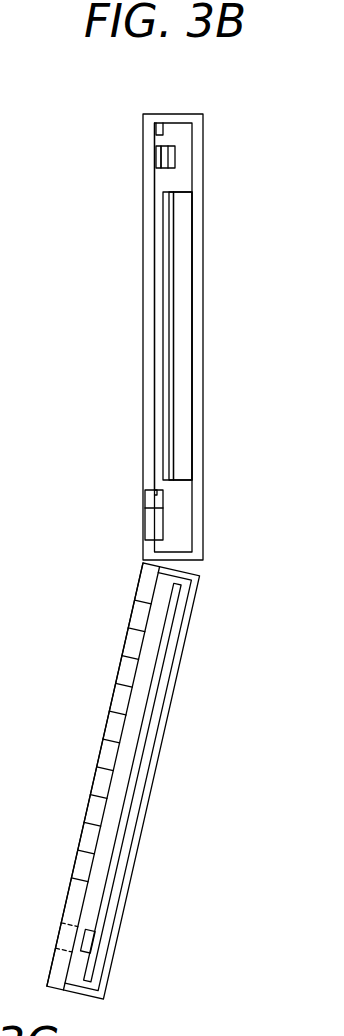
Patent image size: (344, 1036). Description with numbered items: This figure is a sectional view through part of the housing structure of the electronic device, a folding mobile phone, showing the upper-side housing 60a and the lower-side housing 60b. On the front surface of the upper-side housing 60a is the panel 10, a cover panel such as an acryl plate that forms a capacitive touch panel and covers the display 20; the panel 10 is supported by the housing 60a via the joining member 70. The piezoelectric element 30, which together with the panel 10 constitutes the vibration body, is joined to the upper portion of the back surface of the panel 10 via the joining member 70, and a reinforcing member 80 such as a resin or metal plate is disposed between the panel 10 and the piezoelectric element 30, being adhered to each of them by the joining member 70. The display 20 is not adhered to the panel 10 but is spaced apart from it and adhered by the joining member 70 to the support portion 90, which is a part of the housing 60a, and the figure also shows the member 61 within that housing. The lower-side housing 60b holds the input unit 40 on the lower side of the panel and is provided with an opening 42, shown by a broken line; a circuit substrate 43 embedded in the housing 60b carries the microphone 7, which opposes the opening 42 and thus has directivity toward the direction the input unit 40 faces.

The microphone 7 is at (92, 940).
The panel 10 is at (146, 189).
The display 20 is at (165, 316).
The piezoelectric element 30 is at (174, 160).
The input unit 40 is at (150, 523).
The opening 42 is at (63, 934).
The circuit substrate 43 is at (131, 812).
The upper-side housing 60a is at (187, 113).
The lower-side housing 60b is at (185, 644).
The holder frame 61 is at (197, 212).
The joining member 70 is at (157, 131).
The reinforcing member 80 is at (158, 157).
The support portion 90 is at (185, 268).